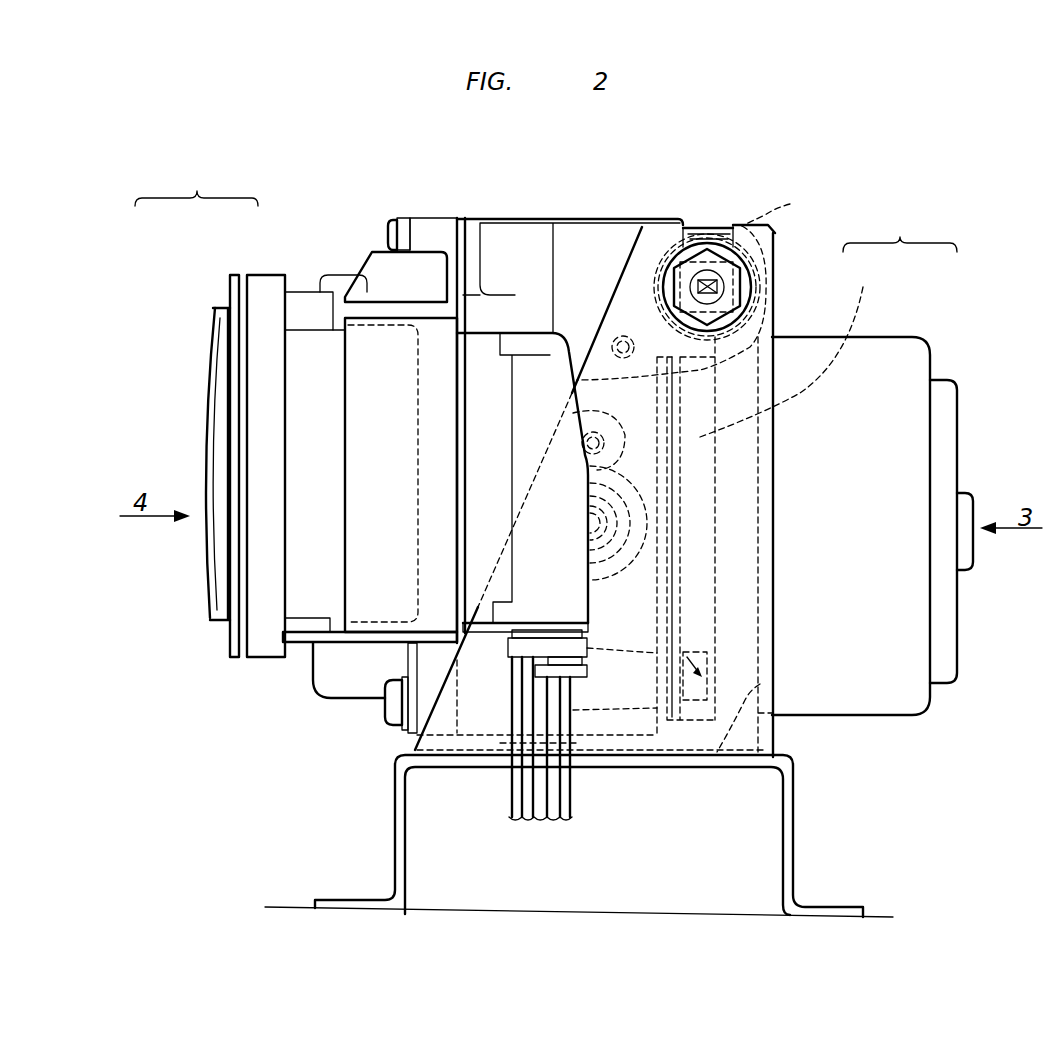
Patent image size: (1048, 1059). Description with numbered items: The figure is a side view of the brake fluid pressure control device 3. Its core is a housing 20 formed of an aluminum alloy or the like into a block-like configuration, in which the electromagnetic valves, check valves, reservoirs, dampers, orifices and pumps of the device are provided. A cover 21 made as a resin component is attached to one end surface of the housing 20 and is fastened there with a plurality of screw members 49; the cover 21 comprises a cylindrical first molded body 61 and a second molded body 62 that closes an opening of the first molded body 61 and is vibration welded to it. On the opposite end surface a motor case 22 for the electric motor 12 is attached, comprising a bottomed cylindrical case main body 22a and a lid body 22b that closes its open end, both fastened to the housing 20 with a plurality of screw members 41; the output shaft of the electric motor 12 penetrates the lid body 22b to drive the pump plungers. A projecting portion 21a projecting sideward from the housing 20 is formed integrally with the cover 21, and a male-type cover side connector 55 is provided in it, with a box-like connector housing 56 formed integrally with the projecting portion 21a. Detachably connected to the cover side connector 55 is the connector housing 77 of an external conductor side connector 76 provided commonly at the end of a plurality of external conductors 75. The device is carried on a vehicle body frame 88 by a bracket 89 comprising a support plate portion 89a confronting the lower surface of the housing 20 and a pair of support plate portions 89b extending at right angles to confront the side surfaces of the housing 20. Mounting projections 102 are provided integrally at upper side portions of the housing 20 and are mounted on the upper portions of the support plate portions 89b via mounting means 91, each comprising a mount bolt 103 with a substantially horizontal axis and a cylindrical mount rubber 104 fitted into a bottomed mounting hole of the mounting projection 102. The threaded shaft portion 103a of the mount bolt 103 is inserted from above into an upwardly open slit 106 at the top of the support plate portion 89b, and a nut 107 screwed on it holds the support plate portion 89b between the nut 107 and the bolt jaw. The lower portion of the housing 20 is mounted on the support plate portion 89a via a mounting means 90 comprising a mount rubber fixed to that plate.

The brake fluid pressure control device 3 is at (587, 219).
The electric motor 12 is at (875, 527).
The housing 20 is at (520, 232).
The cover 21 is at (196, 390).
The projecting portion 21a is at (305, 608).
The motor case 22 is at (900, 231).
The case main body 22a is at (900, 353).
The lid body 22b is at (795, 347).
The screw members 41 is at (700, 630).
The screw members 49 is at (393, 226).
The cover side connector 55 is at (426, 389).
The connector housing 56 is at (420, 443).
The first molded body 61 is at (264, 283).
The second molded body 62 is at (233, 292).
The external conductors 75 is at (565, 780).
The external conductor side connector 76 is at (372, 643).
The connector housing 77 is at (357, 426).
The vehicle body frame 88 is at (881, 917).
The bracket 89 is at (796, 810).
The support plate portion 89a is at (760, 684).
The support plate portions 89b is at (625, 283).
The mounting means 90 is at (499, 749).
The mounting means 91 is at (715, 230).
The mounting projections 102 is at (790, 205).
The mount bolt 103 is at (685, 297).
The threaded shaft portion 103a is at (738, 300).
The mount rubber 104 is at (735, 228).
The slit 106 is at (683, 232).
The nut 107 is at (700, 247).